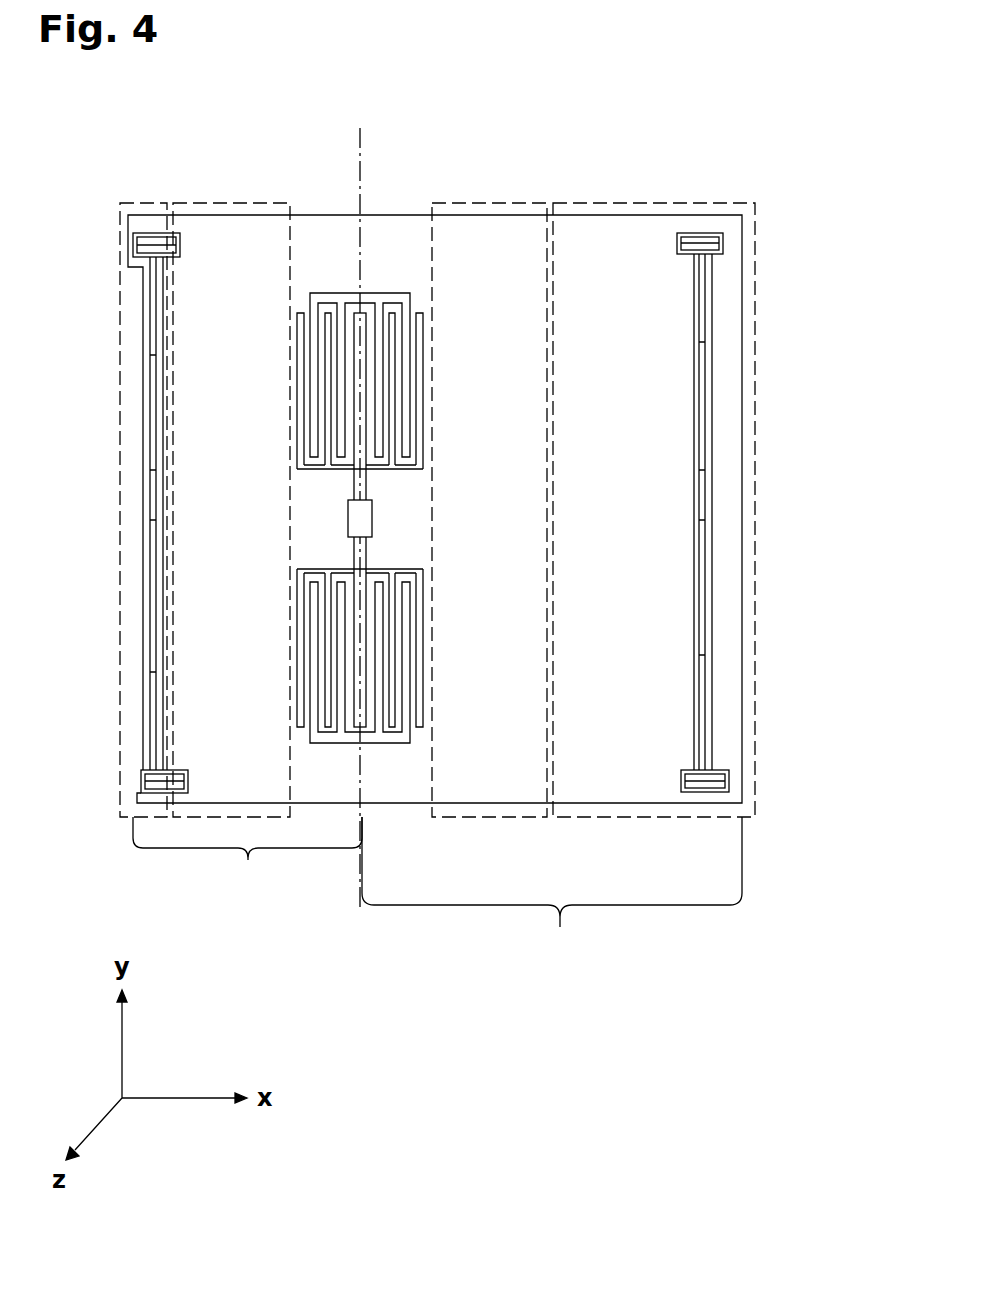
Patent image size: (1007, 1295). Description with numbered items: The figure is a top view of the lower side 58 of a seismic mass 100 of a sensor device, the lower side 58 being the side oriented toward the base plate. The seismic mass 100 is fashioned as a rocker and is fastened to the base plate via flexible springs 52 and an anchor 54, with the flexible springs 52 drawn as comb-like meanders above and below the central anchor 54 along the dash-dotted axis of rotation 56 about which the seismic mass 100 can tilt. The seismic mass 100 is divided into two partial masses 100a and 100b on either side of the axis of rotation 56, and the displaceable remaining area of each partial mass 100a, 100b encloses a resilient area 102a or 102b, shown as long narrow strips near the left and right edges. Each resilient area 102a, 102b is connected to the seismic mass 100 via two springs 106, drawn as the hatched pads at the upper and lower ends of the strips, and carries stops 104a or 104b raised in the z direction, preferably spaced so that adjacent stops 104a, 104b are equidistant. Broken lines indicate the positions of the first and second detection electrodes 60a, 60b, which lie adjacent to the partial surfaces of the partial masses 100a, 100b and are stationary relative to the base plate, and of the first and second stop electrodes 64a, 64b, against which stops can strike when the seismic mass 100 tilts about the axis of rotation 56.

The seismic mass 100 is at (435, 474).
The first partial mass 100a is at (247, 855).
The second partial mass 100b is at (552, 891).
The spring 106 is at (688, 237).
The flexible spring 52 is at (352, 306).
The anchor 54 is at (372, 518).
The axis of rotation 56 is at (358, 873).
The lower side 58 is at (383, 782).
The first detection electrode 60a is at (210, 808).
The second detection electrode 60b is at (497, 810).
The first stop electrode 64a is at (127, 807).
The second stop electrode 64b is at (628, 808).
The first resilient area 102a is at (160, 556).
The second resilient area 102b is at (705, 466).
The stop 104a is at (160, 356).
The stop 104b is at (700, 343).